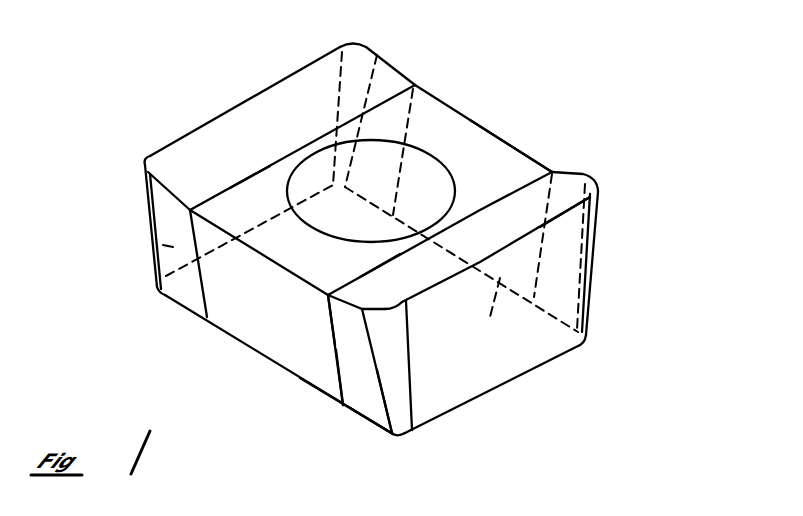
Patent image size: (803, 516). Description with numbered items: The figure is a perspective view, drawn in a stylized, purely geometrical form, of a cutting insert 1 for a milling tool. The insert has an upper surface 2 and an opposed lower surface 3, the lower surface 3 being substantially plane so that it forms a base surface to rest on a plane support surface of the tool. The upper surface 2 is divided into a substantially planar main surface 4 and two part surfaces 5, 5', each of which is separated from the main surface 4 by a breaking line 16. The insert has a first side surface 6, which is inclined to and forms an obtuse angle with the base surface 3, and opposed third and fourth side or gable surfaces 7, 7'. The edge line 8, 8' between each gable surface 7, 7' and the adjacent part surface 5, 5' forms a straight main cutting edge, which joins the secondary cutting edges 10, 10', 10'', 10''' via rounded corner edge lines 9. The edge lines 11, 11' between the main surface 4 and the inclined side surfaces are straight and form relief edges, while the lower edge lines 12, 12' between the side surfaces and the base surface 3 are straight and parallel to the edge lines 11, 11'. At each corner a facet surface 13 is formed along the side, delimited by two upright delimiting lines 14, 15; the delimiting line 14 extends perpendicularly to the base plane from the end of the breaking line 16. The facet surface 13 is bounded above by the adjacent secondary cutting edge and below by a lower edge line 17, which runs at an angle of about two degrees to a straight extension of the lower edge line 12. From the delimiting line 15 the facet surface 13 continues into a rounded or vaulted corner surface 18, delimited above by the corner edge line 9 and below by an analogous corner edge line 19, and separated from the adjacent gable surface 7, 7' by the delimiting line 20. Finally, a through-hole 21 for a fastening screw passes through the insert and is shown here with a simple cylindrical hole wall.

The cutting insert 1 is at (648, 270).
The upper surface 2 is at (507, 153).
The lower surface 3 is at (295, 352).
The main surface 4 is at (444, 145).
The part surface 5 is at (302, 147).
The part surface 5' is at (496, 249).
The first side surface 6 is at (265, 327).
The third side surface 7 is at (223, 230).
The fourth side surface 7' is at (501, 312).
The edge line 8 is at (245, 89).
The edge line 8' is at (565, 236).
The corner edge line 9 is at (144, 161).
The secondary cutting edge 10 is at (136, 230).
The secondary cutting edge 10' is at (391, 116).
The secondary cutting edge 10'' is at (581, 223).
The secondary cutting edge 10''' is at (330, 320).
The edge line 11 is at (259, 252).
The edge line 11' is at (483, 116).
The lower edge line 12 is at (279, 364).
The lower edge line 12' is at (483, 312).
The facet surface 13 is at (372, 392).
The delimiting line 14 is at (342, 373).
The delimiting line 15 is at (377, 360).
The breaking line 16 is at (250, 180).
The lower edge line 17 is at (365, 424).
The corner surface 18 is at (398, 368).
The corner edge line 19 is at (403, 438).
The delimiting line 20 is at (407, 337).
The through-hole 21 is at (333, 221).